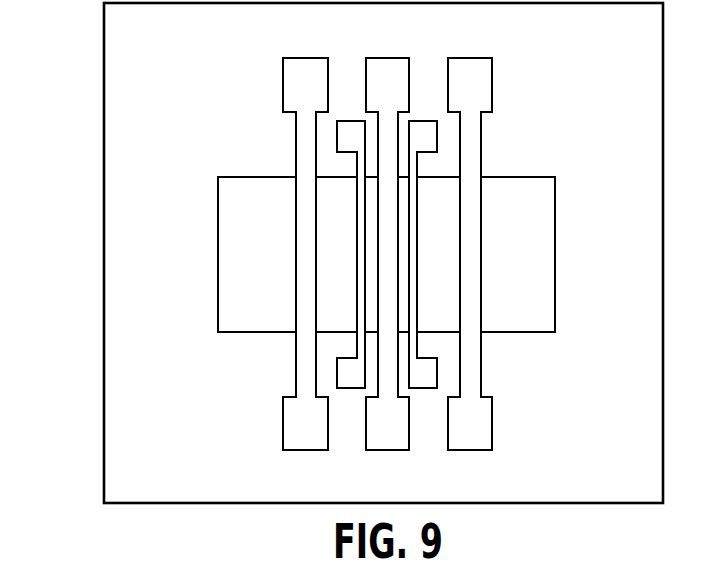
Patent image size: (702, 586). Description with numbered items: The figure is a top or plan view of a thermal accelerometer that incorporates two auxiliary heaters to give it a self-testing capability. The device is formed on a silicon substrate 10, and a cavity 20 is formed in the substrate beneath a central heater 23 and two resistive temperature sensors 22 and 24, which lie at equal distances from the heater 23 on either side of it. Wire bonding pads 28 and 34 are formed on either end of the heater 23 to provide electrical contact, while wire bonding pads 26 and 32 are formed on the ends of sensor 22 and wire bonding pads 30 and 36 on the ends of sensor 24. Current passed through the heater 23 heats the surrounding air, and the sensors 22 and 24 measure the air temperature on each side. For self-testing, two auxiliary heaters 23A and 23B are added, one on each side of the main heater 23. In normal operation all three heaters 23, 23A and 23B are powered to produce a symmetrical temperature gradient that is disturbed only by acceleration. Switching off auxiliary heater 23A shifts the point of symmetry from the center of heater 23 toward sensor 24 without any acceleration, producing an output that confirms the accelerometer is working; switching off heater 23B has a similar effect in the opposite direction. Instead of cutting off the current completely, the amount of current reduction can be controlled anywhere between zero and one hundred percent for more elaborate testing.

The silicon substrate 10 is at (104, 144).
The cavity 20 is at (537, 271).
The sensor 22 is at (298, 207).
The central heater 23 is at (386, 245).
The auxiliary heater 23A is at (360, 288).
The auxiliary heater 23B is at (418, 312).
The sensor 24 is at (482, 206).
The wire bonding pad 26 is at (285, 84).
The wire bonding pad 28 is at (388, 65).
The wire bonding pad 30 is at (486, 84).
The wire bonding pad 32 is at (288, 420).
The wire bonding pad 34 is at (372, 418).
The wire bonding pad 36 is at (489, 427).